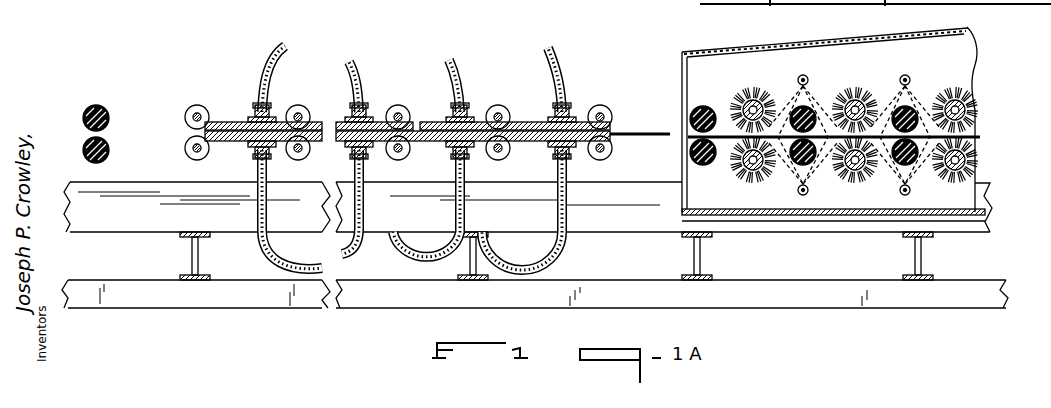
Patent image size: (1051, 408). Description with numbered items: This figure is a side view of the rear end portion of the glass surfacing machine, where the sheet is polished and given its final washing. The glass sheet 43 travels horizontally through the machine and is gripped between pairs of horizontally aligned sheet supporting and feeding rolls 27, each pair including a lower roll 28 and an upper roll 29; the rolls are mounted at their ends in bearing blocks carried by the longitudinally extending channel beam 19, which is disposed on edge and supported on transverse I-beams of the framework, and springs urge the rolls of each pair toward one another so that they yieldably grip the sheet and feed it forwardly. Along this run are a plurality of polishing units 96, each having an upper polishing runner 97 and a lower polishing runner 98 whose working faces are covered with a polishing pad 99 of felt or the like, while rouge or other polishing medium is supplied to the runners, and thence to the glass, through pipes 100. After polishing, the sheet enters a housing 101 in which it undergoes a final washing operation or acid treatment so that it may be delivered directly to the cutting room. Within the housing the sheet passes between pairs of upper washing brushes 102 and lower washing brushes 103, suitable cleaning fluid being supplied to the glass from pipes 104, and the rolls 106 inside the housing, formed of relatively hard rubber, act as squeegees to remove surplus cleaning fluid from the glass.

The channel beam 19 is at (128, 222).
The sheet supporting and feeding rolls 27 is at (504, 104).
The lower roll 28 is at (303, 158).
The upper roll 29 is at (308, 106).
The glass sheet 43 is at (628, 137).
The polishing unit 96 is at (427, 108).
The upper polishing runner 97 is at (277, 112).
The lower polishing runner 98 is at (206, 156).
The polishing pad 99 is at (218, 90).
The pipe 100 is at (266, 74).
The housing 101 is at (705, 52).
The upper washing brush 102 is at (758, 92).
The lower washing brush 103 is at (738, 184).
The pipe 104 is at (812, 80).
The roll 106 is at (908, 98).